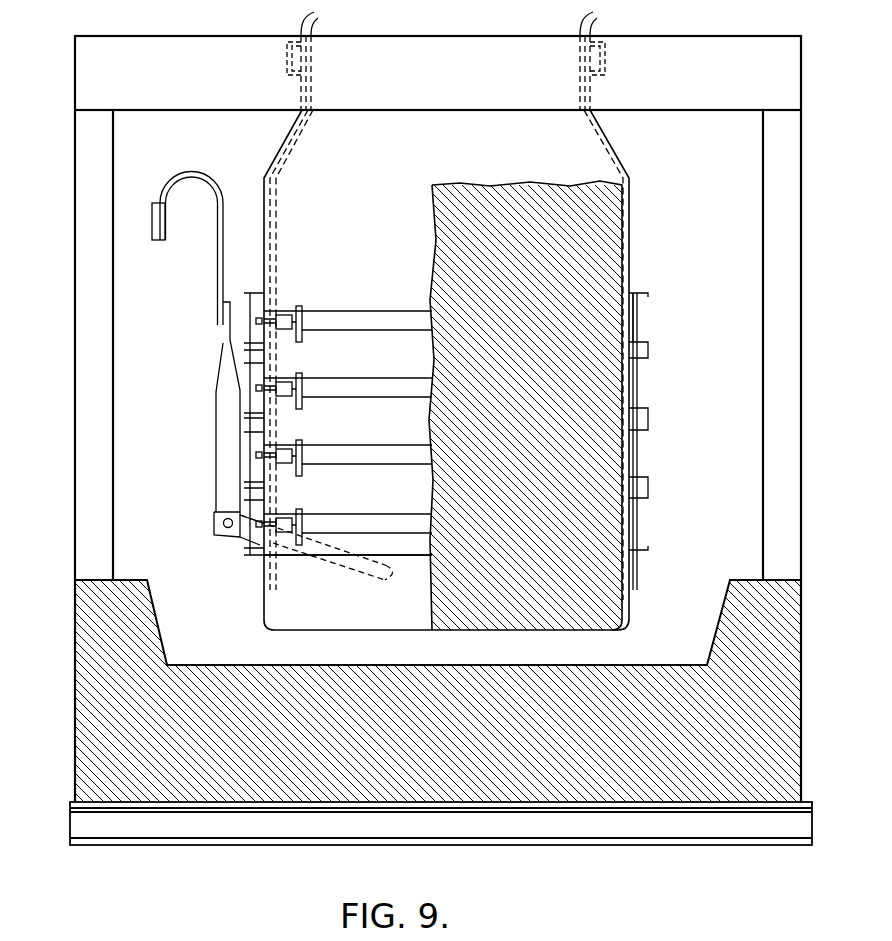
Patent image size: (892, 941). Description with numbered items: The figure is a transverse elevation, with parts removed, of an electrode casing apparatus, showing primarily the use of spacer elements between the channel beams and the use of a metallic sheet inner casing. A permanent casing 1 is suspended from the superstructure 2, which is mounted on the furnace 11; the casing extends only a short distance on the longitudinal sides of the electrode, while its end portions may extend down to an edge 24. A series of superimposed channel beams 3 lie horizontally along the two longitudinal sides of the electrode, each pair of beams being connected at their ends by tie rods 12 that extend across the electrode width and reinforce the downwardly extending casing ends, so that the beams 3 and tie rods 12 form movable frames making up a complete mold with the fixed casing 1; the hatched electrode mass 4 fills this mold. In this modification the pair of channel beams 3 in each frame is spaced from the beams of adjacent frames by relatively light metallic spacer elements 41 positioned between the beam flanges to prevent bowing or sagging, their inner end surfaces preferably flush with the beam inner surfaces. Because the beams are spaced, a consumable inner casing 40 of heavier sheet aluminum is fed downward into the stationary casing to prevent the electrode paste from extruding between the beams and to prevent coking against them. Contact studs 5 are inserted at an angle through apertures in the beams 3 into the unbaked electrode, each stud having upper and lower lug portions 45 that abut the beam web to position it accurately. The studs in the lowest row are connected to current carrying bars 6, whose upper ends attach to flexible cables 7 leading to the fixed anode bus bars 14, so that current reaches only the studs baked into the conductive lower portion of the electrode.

The permanent casing 1 is at (277, 145).
The superstructure 2 is at (172, 36).
The channel beams 3 is at (649, 294).
The core block 4 is at (630, 616).
The contact studs 5 is at (348, 571).
The current carrying bars 6 is at (216, 413).
The flexible cables 7 is at (218, 263).
The furnace 11 is at (88, 663).
The tie rods 12 is at (376, 311).
The anode bus bars 14 is at (152, 232).
The edge 24 is at (417, 556).
The inner casing 40 is at (581, 21).
The spacer elements 41 is at (650, 352).
The lug portion 45 is at (258, 546).